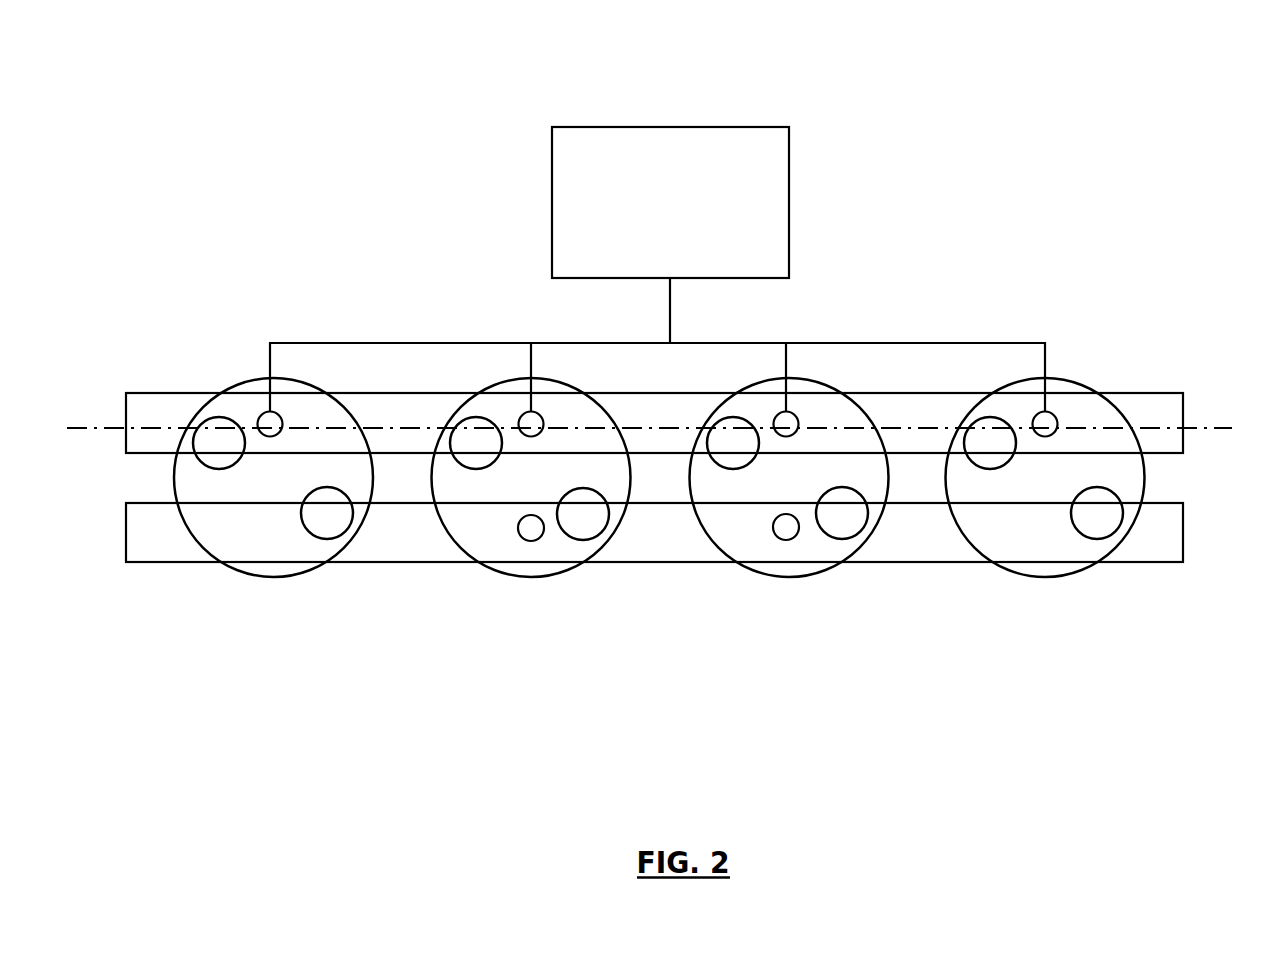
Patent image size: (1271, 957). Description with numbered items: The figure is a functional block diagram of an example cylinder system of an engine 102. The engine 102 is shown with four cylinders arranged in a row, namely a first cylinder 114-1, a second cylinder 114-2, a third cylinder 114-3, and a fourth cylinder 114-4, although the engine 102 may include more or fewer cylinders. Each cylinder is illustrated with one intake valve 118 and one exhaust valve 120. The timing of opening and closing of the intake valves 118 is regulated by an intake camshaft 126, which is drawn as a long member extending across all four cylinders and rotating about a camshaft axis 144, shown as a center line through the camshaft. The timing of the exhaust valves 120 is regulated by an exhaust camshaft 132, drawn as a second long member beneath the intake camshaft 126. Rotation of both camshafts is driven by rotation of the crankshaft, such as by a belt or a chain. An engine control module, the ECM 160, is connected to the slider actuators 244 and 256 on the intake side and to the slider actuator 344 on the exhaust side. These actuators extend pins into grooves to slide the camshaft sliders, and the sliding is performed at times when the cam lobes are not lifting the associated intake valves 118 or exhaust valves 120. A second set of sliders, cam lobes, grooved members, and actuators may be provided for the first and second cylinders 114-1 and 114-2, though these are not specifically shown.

The engine 102 is at (224, 88).
The ECM 160 is at (789, 203).
The intake camshaft 126 is at (174, 394).
The exhaust camshaft 132 is at (174, 562).
The camshaft axis 144 is at (1232, 426).
The first cylinder 114-1 is at (270, 578).
The second cylinder 114-2 is at (531, 578).
The third cylinder 114-3 is at (785, 578).
The fourth cylinder 114-4 is at (1039, 578).
The intake valve 118 is at (217, 418).
The exhaust valve 120 is at (352, 512).
The slider actuator 244 is at (778, 412).
The slider actuator 256 is at (1036, 411).
The slider actuator 344 is at (786, 540).